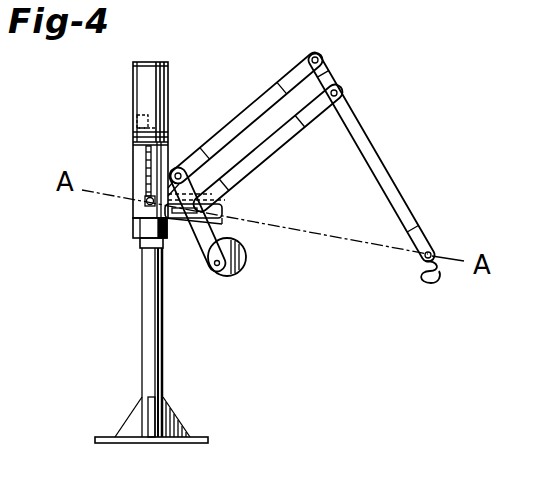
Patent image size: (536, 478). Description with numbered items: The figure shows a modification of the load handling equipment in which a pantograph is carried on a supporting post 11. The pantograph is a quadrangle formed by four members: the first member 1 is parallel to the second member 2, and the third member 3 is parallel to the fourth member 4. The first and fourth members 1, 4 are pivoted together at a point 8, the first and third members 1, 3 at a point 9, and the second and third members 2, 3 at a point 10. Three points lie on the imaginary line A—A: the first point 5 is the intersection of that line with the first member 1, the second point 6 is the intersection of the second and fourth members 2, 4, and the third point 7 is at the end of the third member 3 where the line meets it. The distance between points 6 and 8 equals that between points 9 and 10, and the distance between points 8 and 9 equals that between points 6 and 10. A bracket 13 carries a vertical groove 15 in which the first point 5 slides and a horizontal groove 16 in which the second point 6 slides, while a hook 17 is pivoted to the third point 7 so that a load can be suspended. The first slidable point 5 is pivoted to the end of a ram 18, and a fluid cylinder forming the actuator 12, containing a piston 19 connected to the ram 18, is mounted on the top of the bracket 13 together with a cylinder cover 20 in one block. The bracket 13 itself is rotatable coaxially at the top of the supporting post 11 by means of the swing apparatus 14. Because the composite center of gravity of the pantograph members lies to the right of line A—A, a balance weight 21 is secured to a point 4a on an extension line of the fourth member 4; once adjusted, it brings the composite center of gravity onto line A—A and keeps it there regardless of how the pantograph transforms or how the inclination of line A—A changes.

The first member 1 is at (242, 112).
The second member 2 is at (290, 140).
The third member 3 is at (387, 157).
The fourth member 4 is at (189, 180).
The point on extension line of fourth member 4a is at (216, 263).
The first point 5 is at (146, 206).
The second point 6 is at (195, 225).
The third point 7 is at (433, 252).
The pivot point 8 is at (178, 172).
The pivot point 9 is at (318, 57).
The pivot point 10 is at (338, 91).
The supporting post 11 is at (145, 333).
The actuator 12 is at (138, 75).
The bracket 13 is at (133, 179).
The swing apparatus 14 is at (145, 230).
The vertical groove 15 is at (149, 162).
The horizontal groove 16 is at (141, 246).
The hook 17 is at (430, 283).
The ram 18 is at (133, 143).
The piston 19 is at (147, 118).
The cylinder cover 20 is at (148, 132).
The balance weight 21 is at (230, 274).